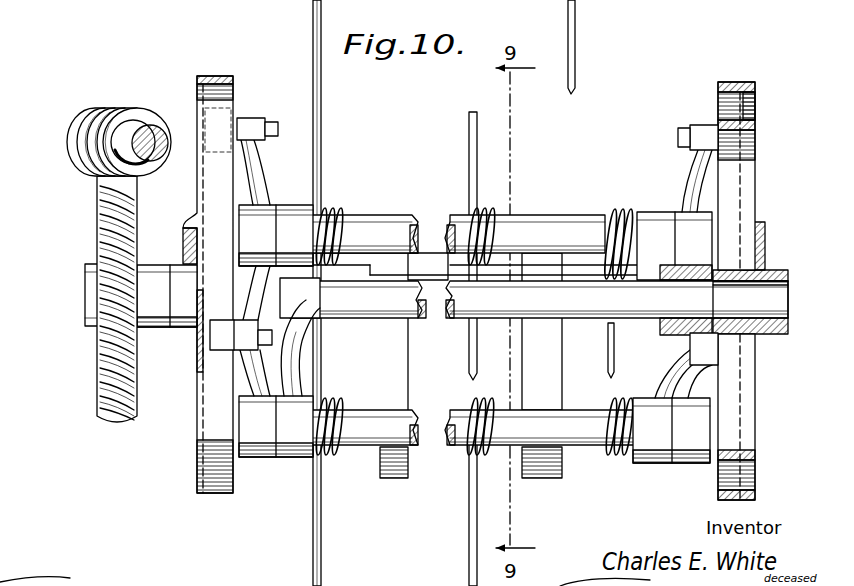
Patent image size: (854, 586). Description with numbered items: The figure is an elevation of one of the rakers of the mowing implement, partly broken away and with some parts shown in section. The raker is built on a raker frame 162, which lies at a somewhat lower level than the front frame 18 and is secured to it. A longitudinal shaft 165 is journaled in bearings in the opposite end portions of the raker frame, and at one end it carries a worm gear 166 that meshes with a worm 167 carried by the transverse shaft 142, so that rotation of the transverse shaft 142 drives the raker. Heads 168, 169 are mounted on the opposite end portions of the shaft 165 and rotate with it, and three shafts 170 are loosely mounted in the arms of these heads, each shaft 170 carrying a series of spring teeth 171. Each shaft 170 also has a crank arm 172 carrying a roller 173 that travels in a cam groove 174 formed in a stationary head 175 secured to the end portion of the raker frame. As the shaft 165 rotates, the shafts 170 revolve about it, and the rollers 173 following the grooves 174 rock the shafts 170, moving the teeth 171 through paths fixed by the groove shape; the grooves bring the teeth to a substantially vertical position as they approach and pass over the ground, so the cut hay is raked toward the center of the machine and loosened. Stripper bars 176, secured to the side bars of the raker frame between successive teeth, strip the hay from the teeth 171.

The front frame 18 is at (766, 237).
The transverse shaft 142 is at (153, 127).
The raker frame 162 is at (346, 262).
The longitudinal shaft 165 is at (452, 319).
The worm gear 166 is at (97, 200).
The worm 167 is at (104, 112).
The head 168 is at (275, 320).
The head 169 is at (660, 330).
The shaft 170 is at (409, 220).
The spring teeth 171 is at (321, 134).
The crank arm 172 is at (265, 188).
The roller 173 is at (236, 118).
The cam groove 174 is at (200, 330).
The stationary head 175 is at (236, 86).
The stripper bar 176 is at (406, 477).